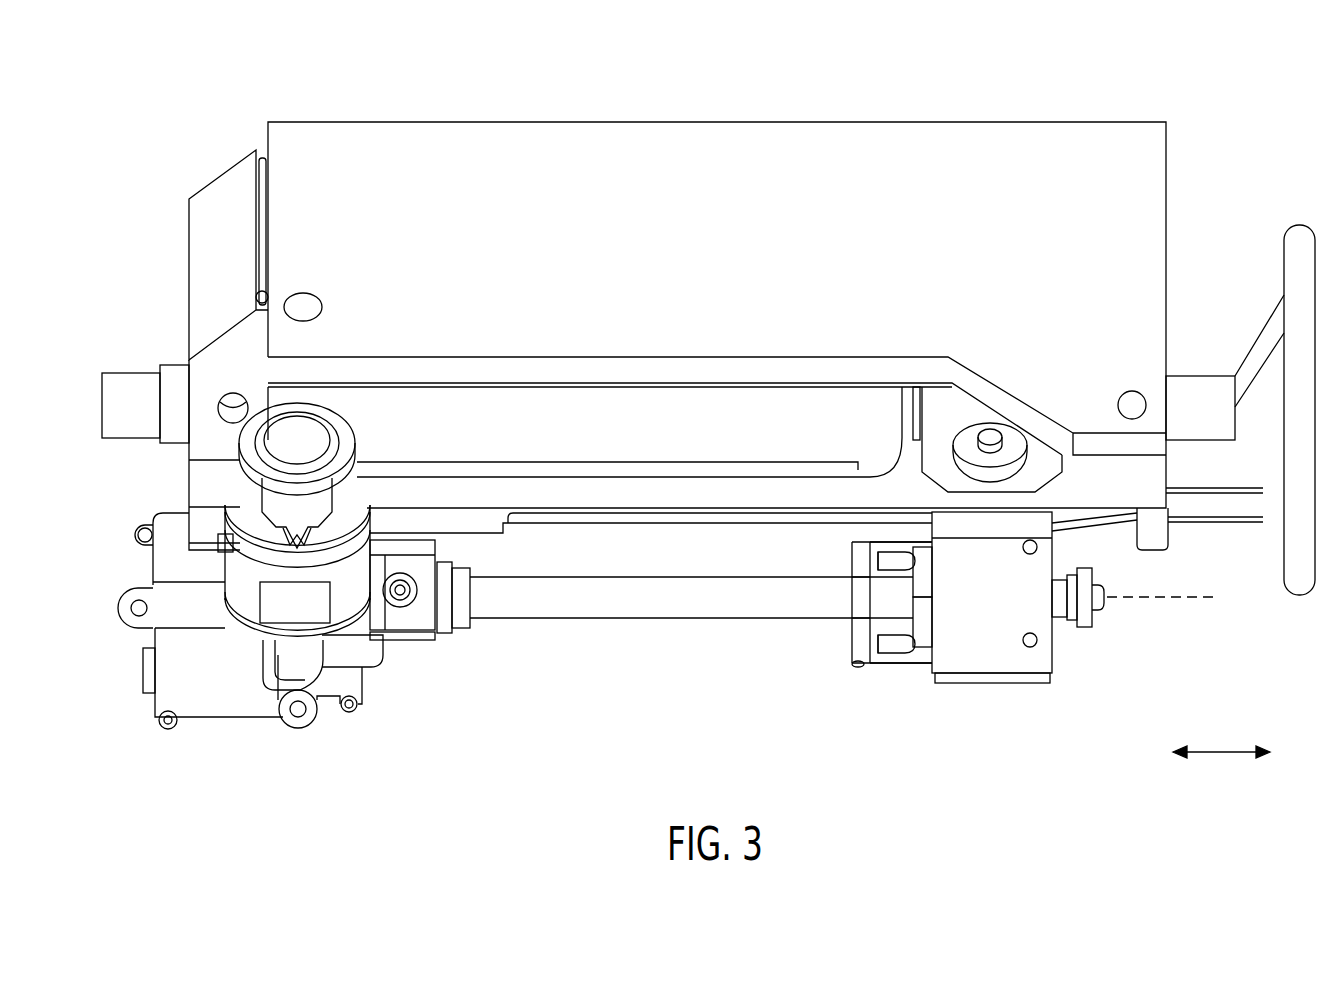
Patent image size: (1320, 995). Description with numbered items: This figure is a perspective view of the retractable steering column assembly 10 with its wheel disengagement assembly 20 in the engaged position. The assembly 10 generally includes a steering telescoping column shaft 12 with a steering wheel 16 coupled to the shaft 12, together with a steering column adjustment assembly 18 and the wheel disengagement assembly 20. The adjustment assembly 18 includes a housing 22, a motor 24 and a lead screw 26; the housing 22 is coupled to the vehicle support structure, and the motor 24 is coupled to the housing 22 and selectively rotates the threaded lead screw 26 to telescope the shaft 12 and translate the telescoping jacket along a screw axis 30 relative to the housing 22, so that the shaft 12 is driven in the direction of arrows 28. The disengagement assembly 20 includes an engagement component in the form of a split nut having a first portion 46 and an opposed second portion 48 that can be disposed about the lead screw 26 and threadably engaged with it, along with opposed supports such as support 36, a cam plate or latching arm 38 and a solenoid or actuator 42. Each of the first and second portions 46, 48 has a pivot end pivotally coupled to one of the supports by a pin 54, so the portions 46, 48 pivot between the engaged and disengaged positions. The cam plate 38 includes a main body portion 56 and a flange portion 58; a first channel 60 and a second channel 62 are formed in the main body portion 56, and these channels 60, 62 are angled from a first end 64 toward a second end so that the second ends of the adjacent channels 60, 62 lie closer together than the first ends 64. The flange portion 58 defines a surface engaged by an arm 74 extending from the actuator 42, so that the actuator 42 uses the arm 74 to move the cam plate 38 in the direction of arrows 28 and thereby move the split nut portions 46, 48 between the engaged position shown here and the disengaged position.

The retractable steering column assembly 10 is at (758, 93).
The steering telescoping column shaft 12 is at (1228, 372).
The steering wheel 16 is at (1296, 225).
The steering column adjustment assembly 18 is at (377, 712).
The wheel disengagement assembly 20 is at (906, 745).
The housing 22 is at (205, 487).
The motor 24 is at (245, 628).
The lead screw 26 is at (717, 622).
The arrows 28 is at (1213, 755).
The screw axis 30 is at (1175, 602).
The support 36 is at (1003, 665).
The cam plate 38 is at (850, 676).
The actuator 42 is at (160, 703).
The first portion 46 is at (930, 567).
The second portion 48 is at (925, 617).
The pin 54 is at (1022, 548).
The main body portion 56 is at (918, 676).
The flange portion 58 is at (838, 623).
The first channel 60 is at (865, 557).
The second channel 62 is at (890, 645).
The first end 64 is at (889, 540).
The arm 74 is at (848, 652).